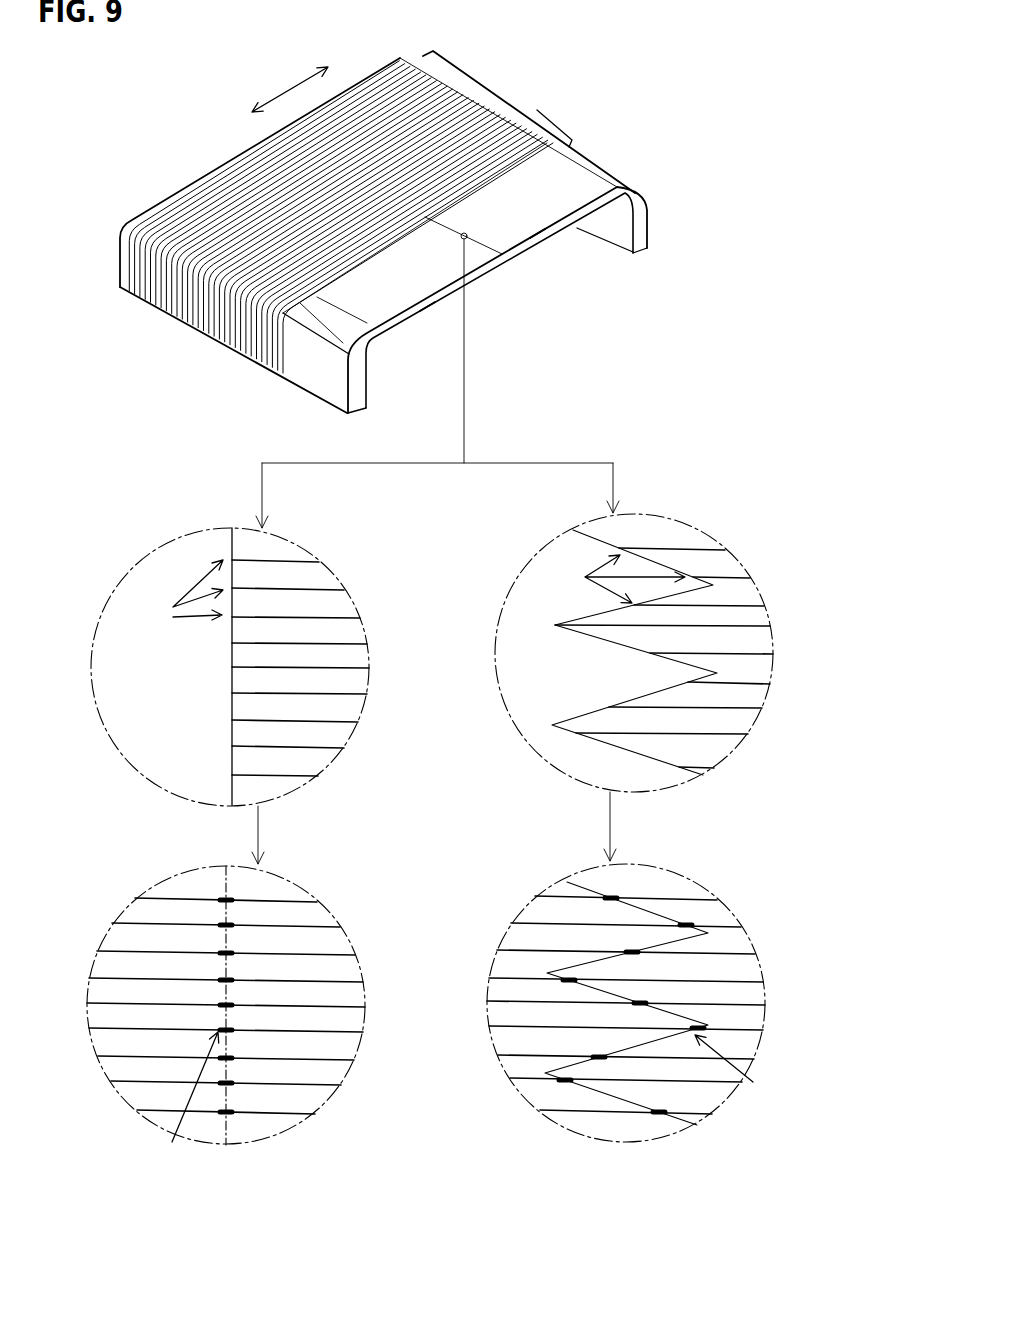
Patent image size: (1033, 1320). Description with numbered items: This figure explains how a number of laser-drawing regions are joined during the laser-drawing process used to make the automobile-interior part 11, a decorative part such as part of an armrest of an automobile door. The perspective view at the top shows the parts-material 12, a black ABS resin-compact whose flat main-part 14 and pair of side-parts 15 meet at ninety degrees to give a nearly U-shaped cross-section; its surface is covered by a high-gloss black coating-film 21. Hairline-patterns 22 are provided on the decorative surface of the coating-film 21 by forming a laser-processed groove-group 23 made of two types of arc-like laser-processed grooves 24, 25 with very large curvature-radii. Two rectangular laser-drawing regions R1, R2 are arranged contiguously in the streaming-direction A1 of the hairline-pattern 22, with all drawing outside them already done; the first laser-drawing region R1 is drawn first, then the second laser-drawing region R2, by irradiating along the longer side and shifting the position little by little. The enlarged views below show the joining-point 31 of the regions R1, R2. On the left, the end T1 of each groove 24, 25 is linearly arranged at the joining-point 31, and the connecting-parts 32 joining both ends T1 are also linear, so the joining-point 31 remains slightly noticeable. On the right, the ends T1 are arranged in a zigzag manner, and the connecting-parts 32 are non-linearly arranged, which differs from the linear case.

The automobile-interior part 11 is at (534, 233).
The parts-material 12 is at (165, 200).
The main-part 14 is at (478, 272).
The side-parts 15 is at (613, 232).
The coating-film 21 is at (572, 163).
The hairline-patterns 22 is at (568, 122).
The laser-processed groove-group 23 is at (537, 117).
The laser-processed grooves 24 is at (352, 623).
The laser-processed grooves 25 is at (457, 816).
The joining-point 31 is at (467, 233).
The connecting-parts 32 is at (228, 1112).
The streaming-direction A1 is at (297, 84).
The first laser-drawing region R1 is at (537, 233).
The second laser-drawing region R2 is at (425, 308).
The end of the laser-processed grooves T1 is at (469, 867).